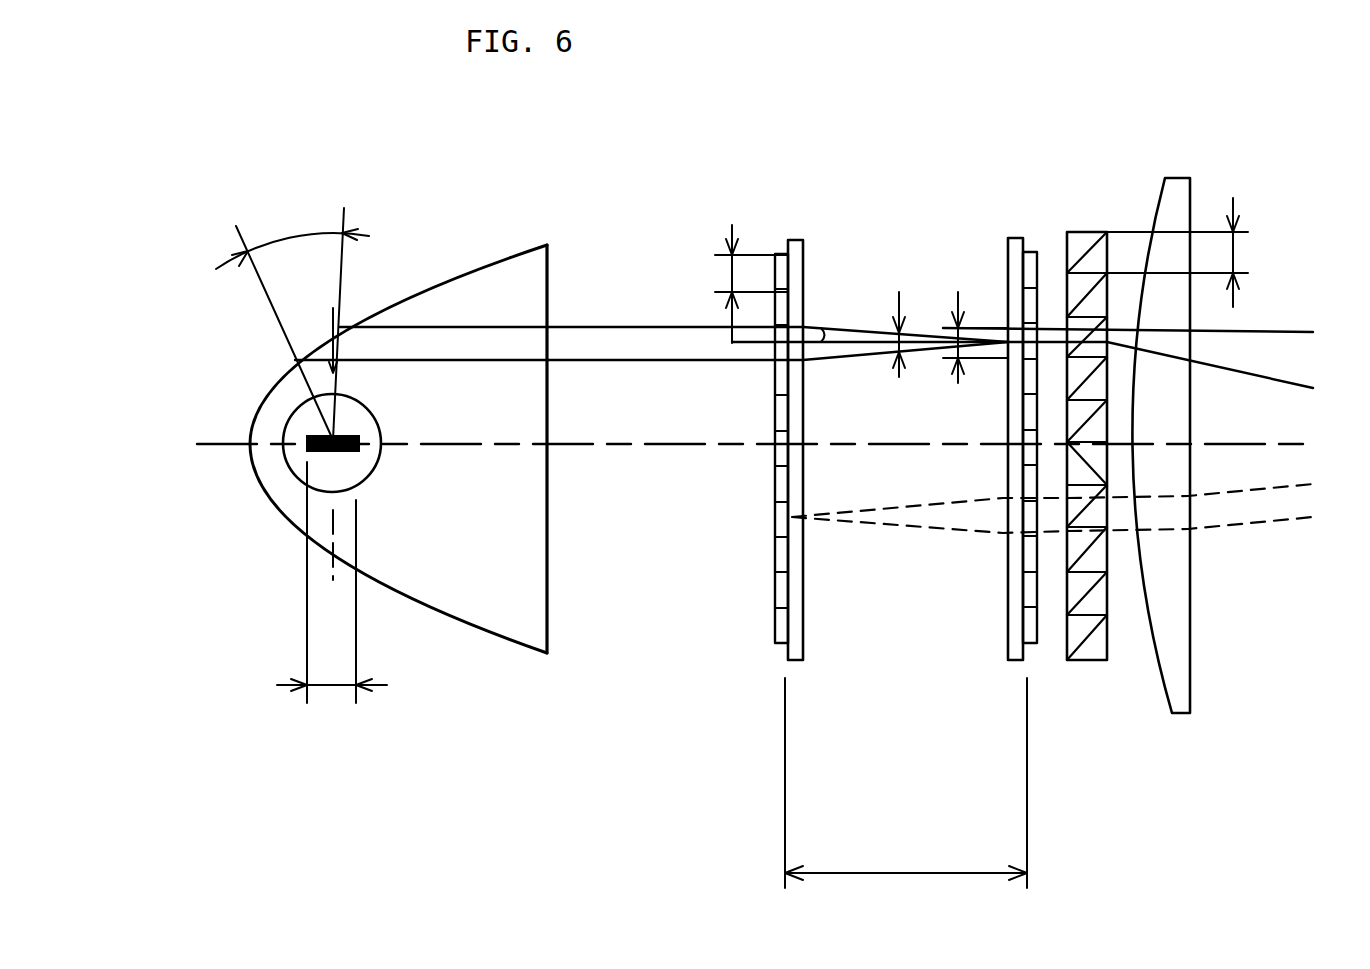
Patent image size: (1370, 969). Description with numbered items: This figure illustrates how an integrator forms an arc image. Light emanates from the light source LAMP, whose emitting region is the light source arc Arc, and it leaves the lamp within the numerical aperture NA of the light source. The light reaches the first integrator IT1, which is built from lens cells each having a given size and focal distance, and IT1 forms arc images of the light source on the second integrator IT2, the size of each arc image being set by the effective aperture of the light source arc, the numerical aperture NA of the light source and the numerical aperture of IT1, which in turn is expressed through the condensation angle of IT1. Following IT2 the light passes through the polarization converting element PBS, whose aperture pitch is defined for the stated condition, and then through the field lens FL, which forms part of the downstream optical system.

The light source LAMP is at (376, 420).
The light source arc Arc is at (334, 458).
The numerical aperture of the light source NA is at (292, 319).
The integrator IT1 is at (786, 399).
The integrator IT2 is at (1021, 399).
The polarization converting element PBS is at (1086, 418).
The field lens FL is at (1167, 423).